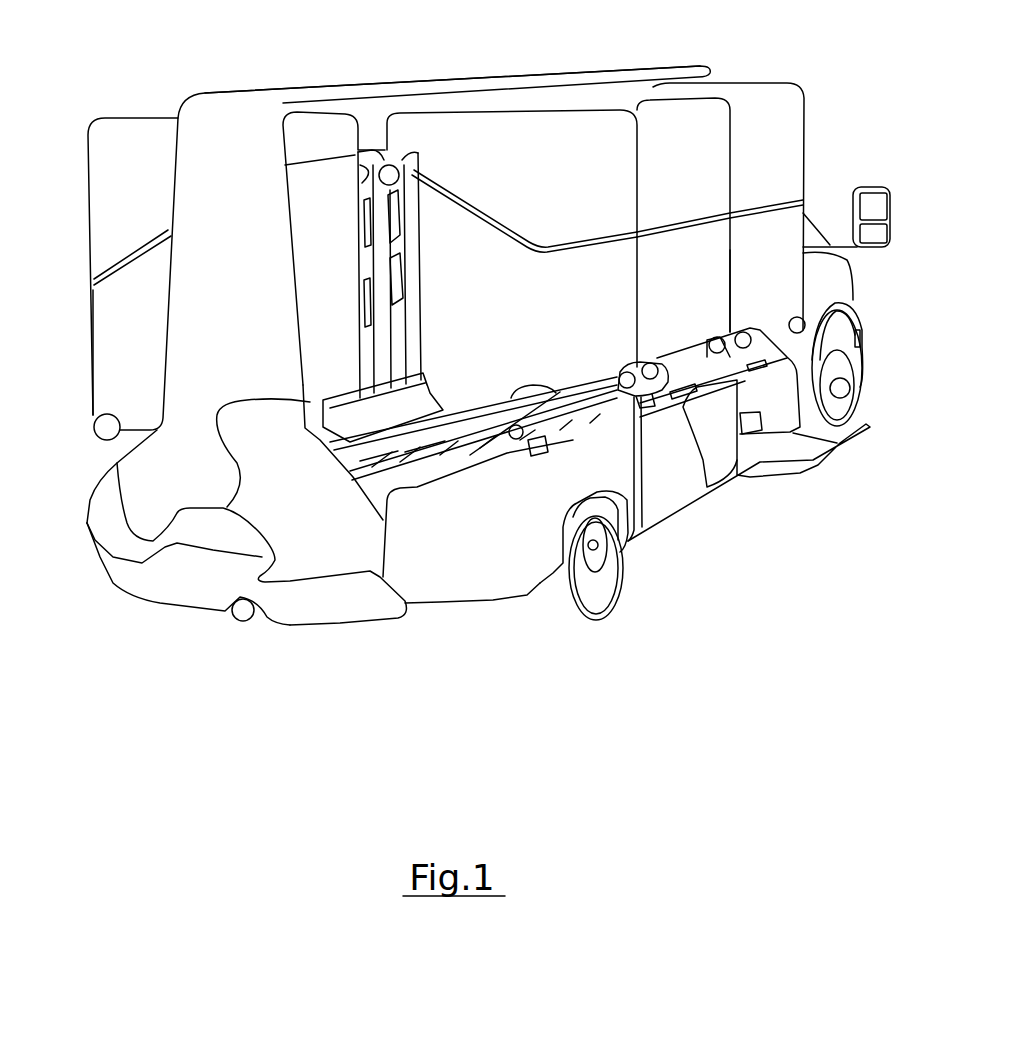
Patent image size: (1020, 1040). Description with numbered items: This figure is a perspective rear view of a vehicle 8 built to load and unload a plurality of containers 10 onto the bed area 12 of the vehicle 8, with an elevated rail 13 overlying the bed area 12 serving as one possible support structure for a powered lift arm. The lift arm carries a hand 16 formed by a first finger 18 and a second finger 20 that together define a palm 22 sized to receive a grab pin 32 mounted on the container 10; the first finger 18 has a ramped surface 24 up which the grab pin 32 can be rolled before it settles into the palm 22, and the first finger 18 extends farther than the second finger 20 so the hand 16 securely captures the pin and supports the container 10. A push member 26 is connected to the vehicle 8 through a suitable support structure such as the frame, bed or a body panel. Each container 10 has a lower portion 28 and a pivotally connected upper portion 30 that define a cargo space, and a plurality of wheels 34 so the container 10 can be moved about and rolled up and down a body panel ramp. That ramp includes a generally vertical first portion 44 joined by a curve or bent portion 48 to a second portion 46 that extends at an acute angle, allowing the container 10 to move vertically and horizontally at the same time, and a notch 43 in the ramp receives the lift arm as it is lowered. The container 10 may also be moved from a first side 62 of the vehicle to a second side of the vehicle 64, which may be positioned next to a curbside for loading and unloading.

The vehicle 8 is at (722, 72).
The container 10 is at (128, 116).
The bed area 12 is at (313, 441).
The elevated rail 13 is at (557, 70).
The hand 16 is at (503, 472).
The first finger 18 is at (536, 456).
The second finger 20 is at (550, 445).
The palm 22 is at (520, 440).
The ramped surface 24 is at (550, 447).
The push member 26 is at (113, 556).
The lower portion 28 is at (142, 344).
The upper portion 30 is at (782, 163).
The grab pin 32 is at (388, 172).
The wheels 34 is at (95, 427).
The notch 43 is at (365, 482).
The first portion 44 is at (420, 502).
The second portion 46 is at (363, 483).
The curve or bent portion 48 is at (390, 477).
The first side 62 is at (128, 443).
The second side of the vehicle 64 is at (833, 281).